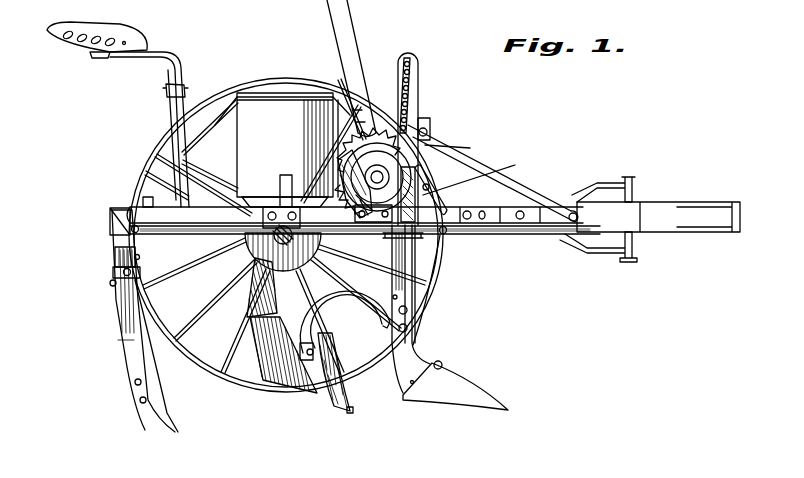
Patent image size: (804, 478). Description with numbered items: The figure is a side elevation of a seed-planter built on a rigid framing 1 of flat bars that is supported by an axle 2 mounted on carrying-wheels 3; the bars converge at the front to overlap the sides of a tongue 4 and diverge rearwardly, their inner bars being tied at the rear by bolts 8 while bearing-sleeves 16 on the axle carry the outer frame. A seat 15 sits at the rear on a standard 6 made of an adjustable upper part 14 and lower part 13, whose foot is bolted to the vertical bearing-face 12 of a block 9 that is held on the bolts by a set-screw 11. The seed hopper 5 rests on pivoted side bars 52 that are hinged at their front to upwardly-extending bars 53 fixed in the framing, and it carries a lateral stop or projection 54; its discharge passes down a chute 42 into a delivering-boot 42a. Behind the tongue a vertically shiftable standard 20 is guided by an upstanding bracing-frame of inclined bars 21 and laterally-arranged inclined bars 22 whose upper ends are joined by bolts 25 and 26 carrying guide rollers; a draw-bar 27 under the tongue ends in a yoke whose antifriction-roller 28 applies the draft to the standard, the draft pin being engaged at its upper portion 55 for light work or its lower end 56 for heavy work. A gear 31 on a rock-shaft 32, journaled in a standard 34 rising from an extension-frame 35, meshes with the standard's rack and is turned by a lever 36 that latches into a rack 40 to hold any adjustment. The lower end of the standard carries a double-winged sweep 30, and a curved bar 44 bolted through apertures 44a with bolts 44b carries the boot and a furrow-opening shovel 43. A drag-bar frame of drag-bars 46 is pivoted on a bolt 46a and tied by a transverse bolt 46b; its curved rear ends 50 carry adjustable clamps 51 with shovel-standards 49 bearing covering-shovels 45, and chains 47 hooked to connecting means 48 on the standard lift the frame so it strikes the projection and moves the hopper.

The framing 1 is at (321, 321).
The axle 2 is at (240, 262).
The carrying-wheels 3 is at (245, 387).
The tongue 4 is at (688, 210).
The hopper 5 is at (268, 135).
The standard 6 is at (217, 191).
The bolts 8 is at (127, 207).
The block 9 is at (147, 178).
The set-screw 11 is at (137, 173).
The vertical bearing-face 12 is at (160, 150).
The lower part 13 is at (170, 103).
The upper part 14 is at (183, 92).
The seat 15 is at (128, 22).
The bearing-sleeves 16 is at (243, 243).
The standard 20 is at (420, 133).
The inclined bars 21 is at (475, 148).
The laterally-arranged inclined bars 22 is at (428, 132).
The bolt 25 is at (465, 115).
The bolt 26 is at (376, 140).
The draw-bar 27 is at (448, 280).
The antifriction-roller 28 is at (370, 255).
The double-winged sweep 30 is at (460, 390).
The gear 31 is at (430, 196).
The rock-shaft 32 is at (345, 97).
The standard 34 is at (452, 262).
The extension-frame 35 is at (313, 237).
The lever 36 is at (348, 30).
The rack 40 is at (300, 150).
The chute 42 is at (250, 320).
The delivering-boot 42a is at (275, 385).
The furrow-opening shovel 43 is at (352, 405).
The curved bar 44 is at (345, 310).
The apertures 44a is at (410, 310).
The bolts 44b is at (410, 328).
The covering-shovel 45 is at (172, 430).
The drag-bars 46 is at (115, 252).
The bolt 46a is at (450, 236).
The transverse bolt 46b is at (110, 214).
The chains 47 is at (414, 97).
The connecting means 48 is at (405, 60).
The shovel-standard 49 is at (128, 330).
The curved rear ends 50 is at (131, 230).
The adjustable clamps 51 is at (113, 275).
The side bars 52 is at (340, 185).
The upwardly-extending bars 53 is at (517, 164).
The stop or projection 54 is at (277, 178).
The upper portion 55 is at (634, 193).
The lower end 56 is at (634, 246).